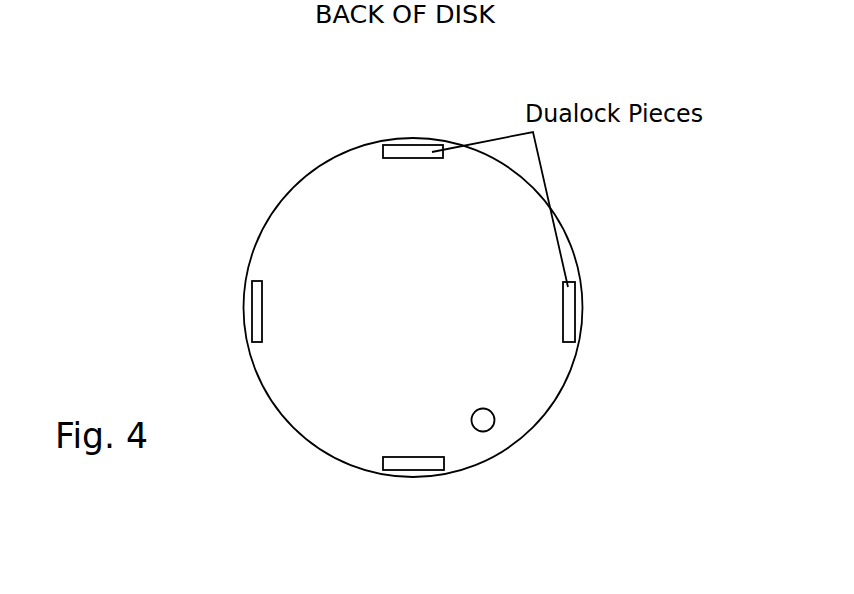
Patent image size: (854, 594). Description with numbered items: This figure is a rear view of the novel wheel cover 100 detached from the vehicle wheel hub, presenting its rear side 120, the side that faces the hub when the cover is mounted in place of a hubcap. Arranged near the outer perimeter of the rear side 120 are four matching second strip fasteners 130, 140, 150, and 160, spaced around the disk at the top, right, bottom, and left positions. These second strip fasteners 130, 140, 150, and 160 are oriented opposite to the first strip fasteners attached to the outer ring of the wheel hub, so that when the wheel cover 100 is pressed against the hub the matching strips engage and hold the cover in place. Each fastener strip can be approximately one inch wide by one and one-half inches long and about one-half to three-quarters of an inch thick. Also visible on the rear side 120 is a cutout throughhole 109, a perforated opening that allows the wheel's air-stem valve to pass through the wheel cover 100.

The wheel cover 100 is at (222, 135).
The cutout throughhole 109 is at (482, 420).
The rear side 120 is at (327, 395).
The second strip fastener 130 is at (413, 153).
The second strip fastener 140 is at (570, 310).
The second strip fastener 150 is at (415, 462).
The second strip fastener 160 is at (257, 312).